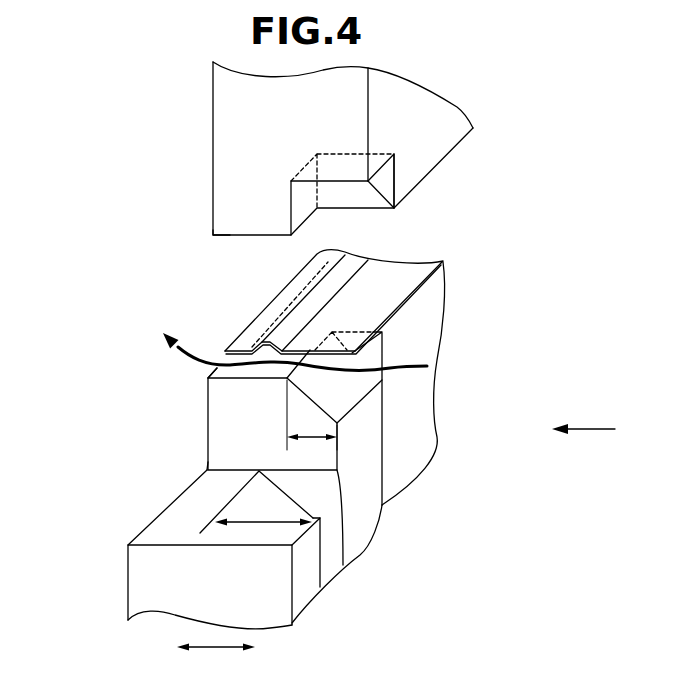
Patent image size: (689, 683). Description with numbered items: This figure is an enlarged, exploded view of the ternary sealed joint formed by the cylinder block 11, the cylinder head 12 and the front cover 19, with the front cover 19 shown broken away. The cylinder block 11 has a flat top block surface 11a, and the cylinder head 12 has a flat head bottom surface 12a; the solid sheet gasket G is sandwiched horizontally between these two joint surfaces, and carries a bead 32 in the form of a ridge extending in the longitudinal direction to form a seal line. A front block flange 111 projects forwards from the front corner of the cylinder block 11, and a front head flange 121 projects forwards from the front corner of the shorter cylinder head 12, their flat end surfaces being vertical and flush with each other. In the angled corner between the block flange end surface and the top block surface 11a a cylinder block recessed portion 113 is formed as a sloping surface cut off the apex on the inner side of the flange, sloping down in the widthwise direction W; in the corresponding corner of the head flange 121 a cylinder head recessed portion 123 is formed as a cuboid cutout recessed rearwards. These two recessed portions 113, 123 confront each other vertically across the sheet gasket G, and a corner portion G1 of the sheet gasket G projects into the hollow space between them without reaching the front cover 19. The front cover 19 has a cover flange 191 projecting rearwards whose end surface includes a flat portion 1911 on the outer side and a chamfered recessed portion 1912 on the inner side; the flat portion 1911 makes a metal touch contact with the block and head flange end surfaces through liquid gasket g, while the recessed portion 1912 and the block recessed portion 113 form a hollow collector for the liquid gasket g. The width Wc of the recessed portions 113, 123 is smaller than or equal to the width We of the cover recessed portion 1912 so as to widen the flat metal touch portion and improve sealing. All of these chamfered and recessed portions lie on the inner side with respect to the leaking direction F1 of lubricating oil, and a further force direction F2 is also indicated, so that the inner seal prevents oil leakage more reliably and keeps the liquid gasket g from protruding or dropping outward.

The cylinder head 12 is at (237, 128).
The front head flange 121 is at (232, 178).
The cylinder head recessed portion 123 is at (377, 188).
The head bottom surface 12a is at (222, 236).
The sheet gasket G is at (300, 287).
The bead 32 is at (277, 323).
The corner portion G1 is at (318, 350).
The top block surface 11a is at (212, 366).
The leaking direction F1 is at (415, 366).
The cylinder block 11 is at (390, 440).
The front block flange 111 is at (217, 402).
The cylinder block recessed portion 113 is at (343, 390).
The width of the block recessed portion Wc is at (312, 423).
The force F2 is at (584, 423).
The front cover 19 is at (158, 585).
The cover flange 191 is at (243, 468).
The flat portion 1911 is at (207, 463).
The liquid gasket g is at (330, 490).
The recessed portion 1912 is at (297, 500).
The width of the cover recessed portion We is at (263, 514).
The widthwise direction W is at (216, 658).